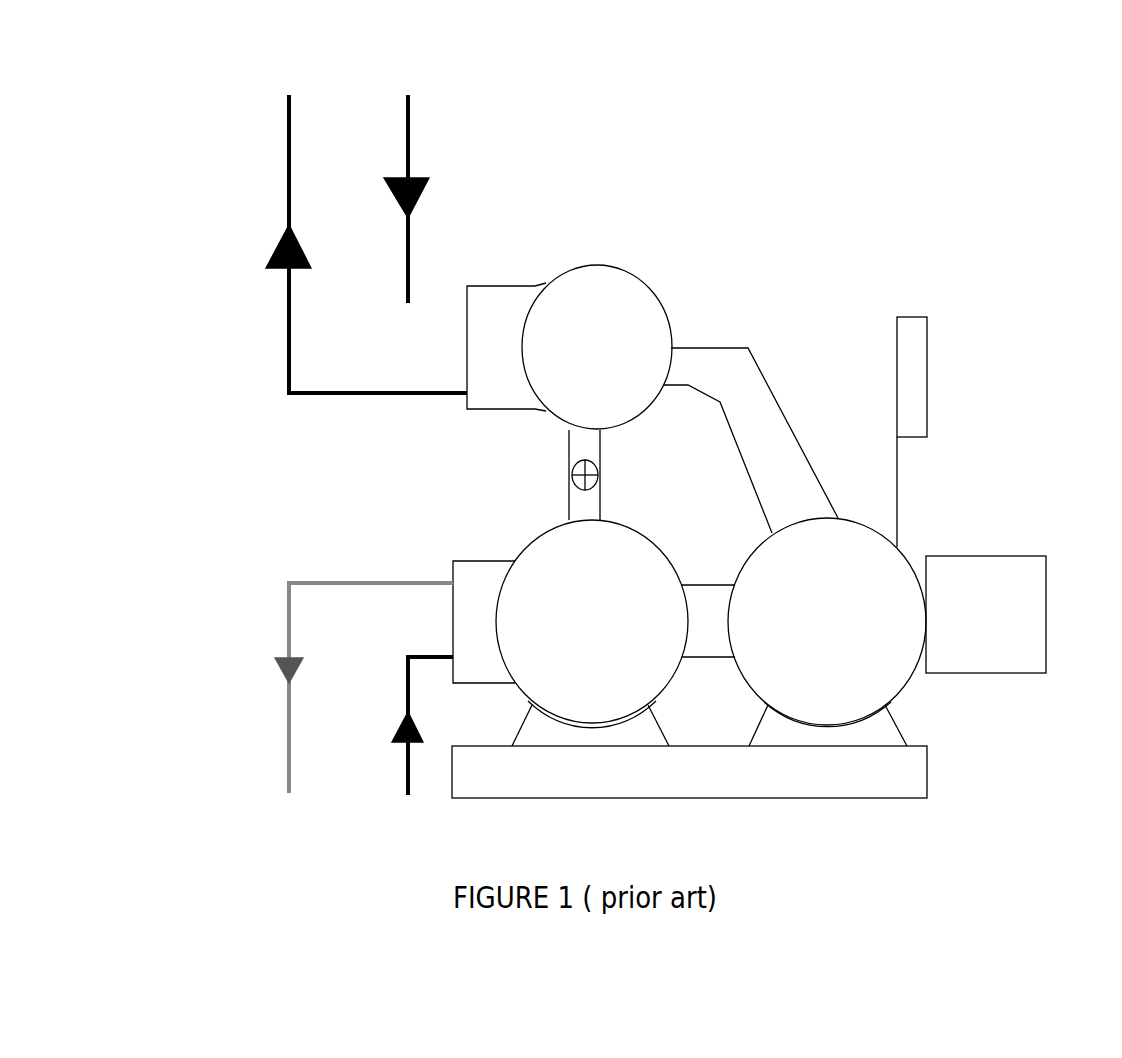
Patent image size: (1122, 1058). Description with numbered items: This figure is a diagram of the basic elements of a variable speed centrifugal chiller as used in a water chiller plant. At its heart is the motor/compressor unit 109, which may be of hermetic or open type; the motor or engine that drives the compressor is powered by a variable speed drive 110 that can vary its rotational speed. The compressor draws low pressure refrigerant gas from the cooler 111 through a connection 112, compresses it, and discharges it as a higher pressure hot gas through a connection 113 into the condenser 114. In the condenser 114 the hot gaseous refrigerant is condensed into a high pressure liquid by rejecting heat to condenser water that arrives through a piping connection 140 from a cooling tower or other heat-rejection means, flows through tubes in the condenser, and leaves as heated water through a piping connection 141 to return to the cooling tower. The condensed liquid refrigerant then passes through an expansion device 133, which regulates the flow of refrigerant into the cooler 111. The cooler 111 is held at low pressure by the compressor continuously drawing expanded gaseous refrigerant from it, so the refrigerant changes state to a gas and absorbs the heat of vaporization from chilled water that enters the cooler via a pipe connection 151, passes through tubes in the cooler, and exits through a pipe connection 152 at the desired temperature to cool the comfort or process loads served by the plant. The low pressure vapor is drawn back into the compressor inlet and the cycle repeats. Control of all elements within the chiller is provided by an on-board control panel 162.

The motor/compressor unit 109 is at (749, 546).
The variable speed drive 110 is at (986, 687).
The cooler 111 is at (512, 702).
The connection 112 is at (705, 662).
The connection 113 is at (705, 318).
The condenser 114 is at (607, 260).
The expansion device 133 is at (557, 475).
The piping connection 140 is at (393, 288).
The piping connection 141 is at (275, 333).
The pipe connection 151 is at (392, 675).
The pipe connection 152 is at (275, 645).
The on-board control panel 162 is at (934, 370).